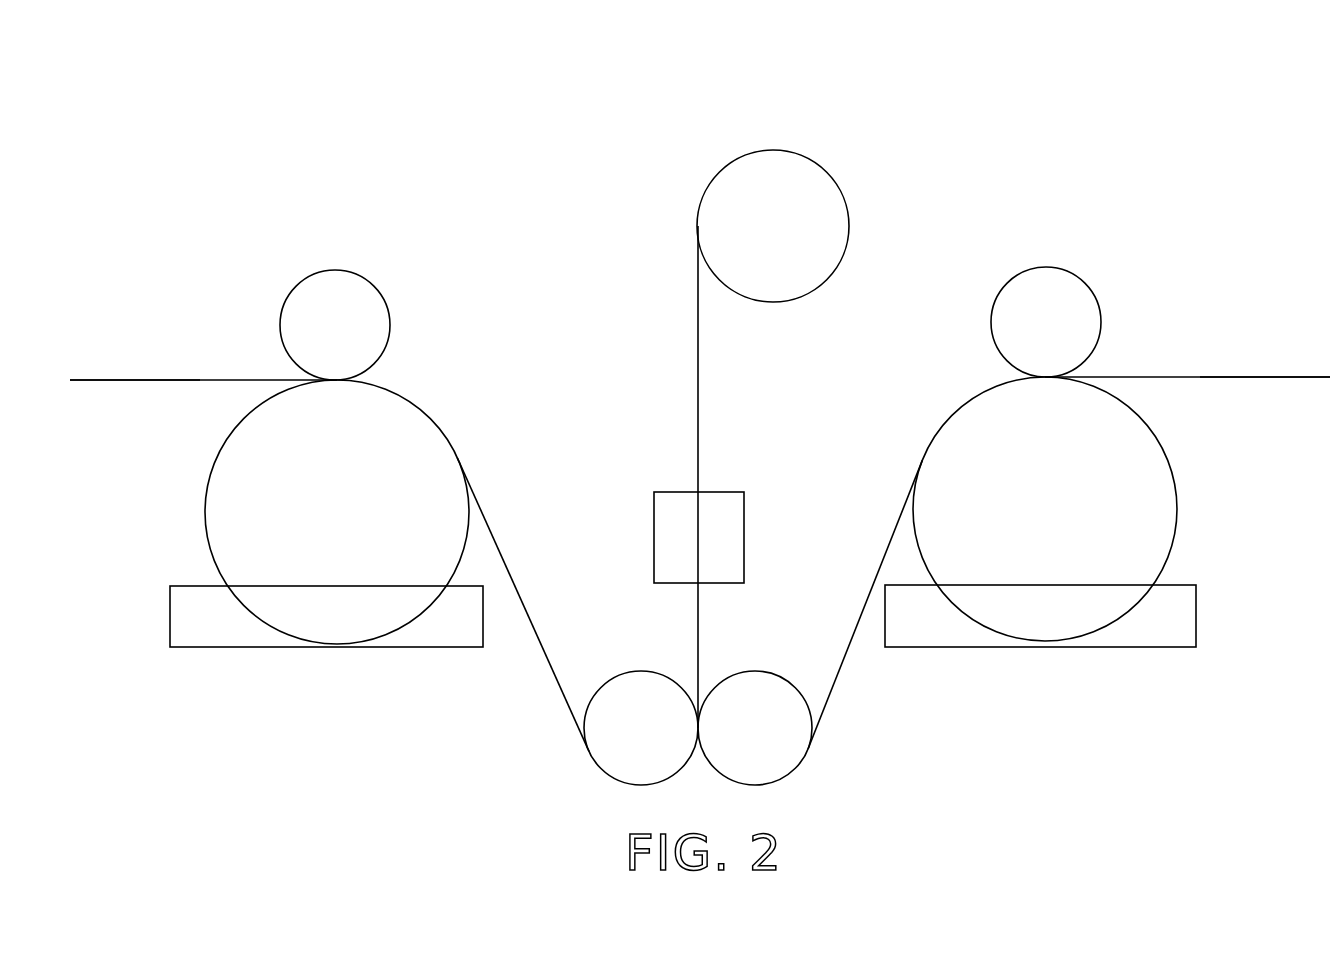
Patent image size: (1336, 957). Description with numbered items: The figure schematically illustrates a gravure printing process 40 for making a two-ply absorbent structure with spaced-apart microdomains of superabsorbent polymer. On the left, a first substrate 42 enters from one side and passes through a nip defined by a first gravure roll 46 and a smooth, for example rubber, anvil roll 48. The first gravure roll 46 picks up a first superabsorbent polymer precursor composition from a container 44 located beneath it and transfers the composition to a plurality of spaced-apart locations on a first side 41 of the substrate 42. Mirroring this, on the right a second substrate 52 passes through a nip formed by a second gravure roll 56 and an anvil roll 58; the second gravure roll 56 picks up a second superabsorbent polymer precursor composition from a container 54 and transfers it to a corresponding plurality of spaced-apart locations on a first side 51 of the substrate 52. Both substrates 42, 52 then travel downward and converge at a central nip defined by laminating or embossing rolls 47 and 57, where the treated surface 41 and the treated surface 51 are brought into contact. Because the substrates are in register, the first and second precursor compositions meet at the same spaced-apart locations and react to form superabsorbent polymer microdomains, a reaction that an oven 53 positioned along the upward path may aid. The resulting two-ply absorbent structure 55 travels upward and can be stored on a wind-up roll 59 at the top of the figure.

The gravure printing process 40 is at (1119, 76).
The first side of substrate 41 is at (184, 382).
The first substrate 42 is at (151, 379).
The container 44 is at (172, 586).
The first gravure roll 46 is at (206, 490).
The laminating or embossing roll 47 is at (621, 674).
The anvil roll 48 is at (368, 280).
The first side of second substrate 51 is at (1193, 380).
The second substrate 52 is at (1240, 376).
The oven 53 is at (744, 492).
The container 54 is at (1197, 586).
The two-ply absorbent structure 55 is at (699, 410).
The second gravure roll 56 is at (1177, 490).
The laminating or embossing roll 57 is at (764, 674).
The anvil roll 58 is at (1053, 270).
The wind-up roll 59 is at (822, 167).